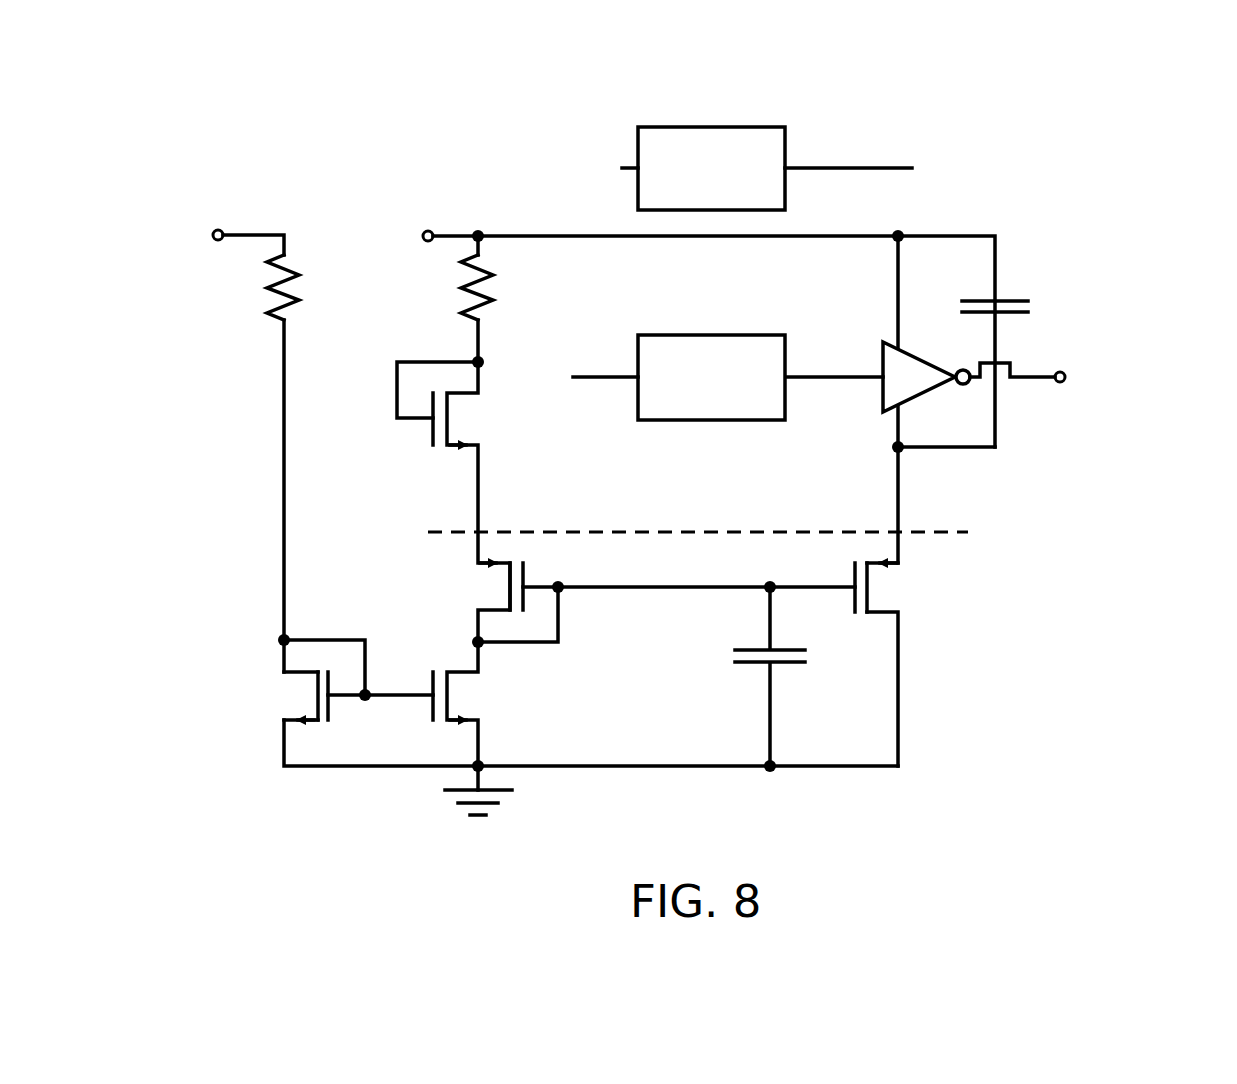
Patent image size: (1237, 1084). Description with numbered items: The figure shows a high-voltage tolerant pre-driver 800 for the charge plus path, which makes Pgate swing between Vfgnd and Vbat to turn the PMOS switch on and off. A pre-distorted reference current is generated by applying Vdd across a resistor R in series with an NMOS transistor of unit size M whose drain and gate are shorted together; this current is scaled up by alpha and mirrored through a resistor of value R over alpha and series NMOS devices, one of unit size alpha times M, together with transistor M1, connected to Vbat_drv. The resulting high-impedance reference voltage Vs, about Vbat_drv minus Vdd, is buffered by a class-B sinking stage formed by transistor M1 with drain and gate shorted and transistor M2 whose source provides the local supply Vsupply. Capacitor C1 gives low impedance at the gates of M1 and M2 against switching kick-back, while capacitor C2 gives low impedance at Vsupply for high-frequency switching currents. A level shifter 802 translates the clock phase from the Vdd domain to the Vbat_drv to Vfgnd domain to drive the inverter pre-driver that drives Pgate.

The HV tolerant pre-driver 800 is at (1035, 140).
The level shifter 802 is at (737, 335).
The resistor R is at (300, 287).
The NMOS transistor of unit size M is at (290, 696).
The transistor M1 is at (547, 592).
The transistor M2 is at (848, 590).
The capacitor C1 is at (777, 676).
The capacitor C2 is at (1004, 291).